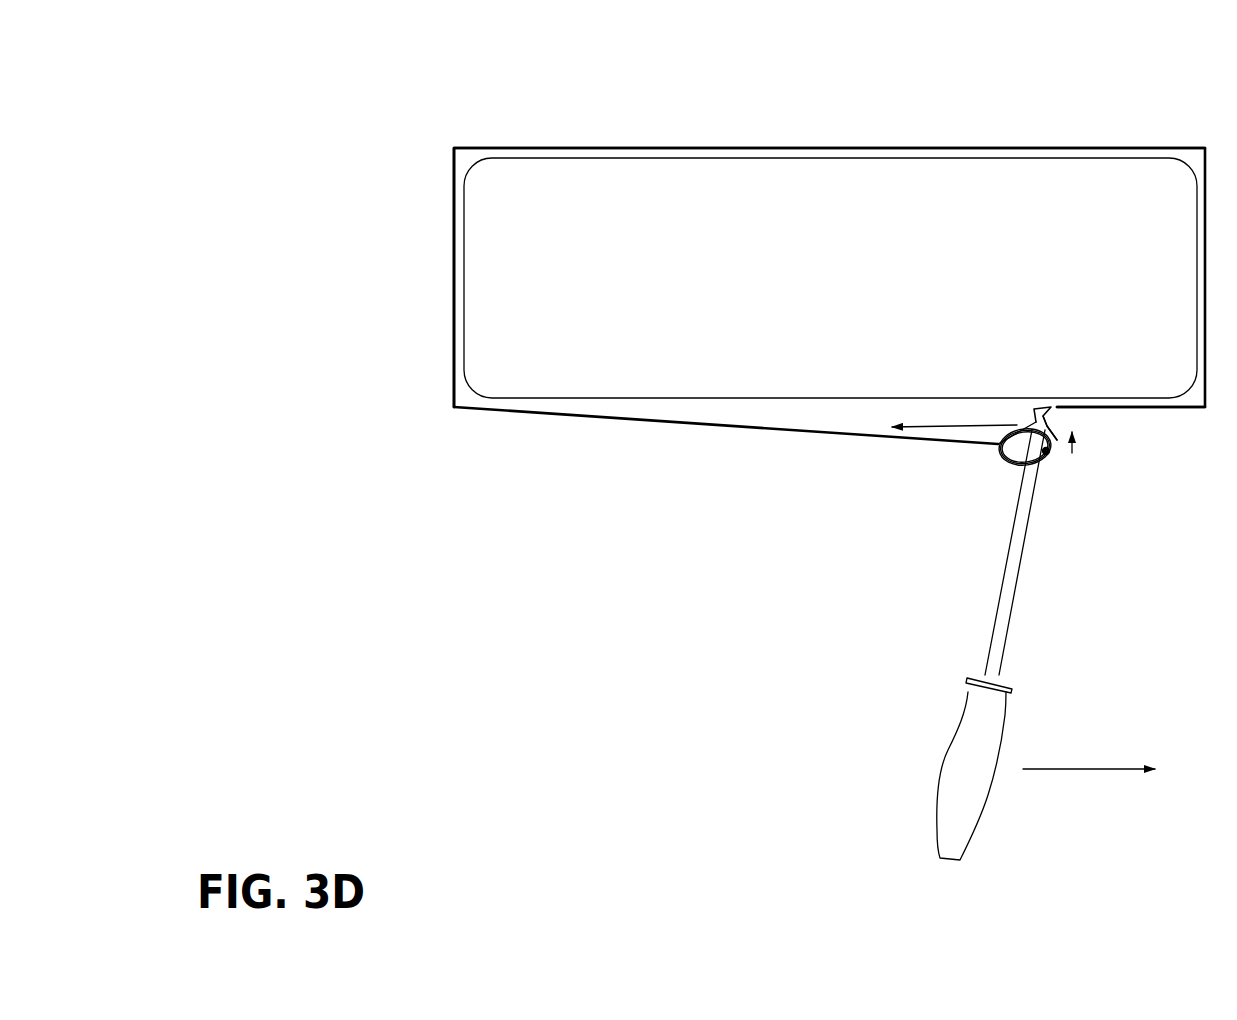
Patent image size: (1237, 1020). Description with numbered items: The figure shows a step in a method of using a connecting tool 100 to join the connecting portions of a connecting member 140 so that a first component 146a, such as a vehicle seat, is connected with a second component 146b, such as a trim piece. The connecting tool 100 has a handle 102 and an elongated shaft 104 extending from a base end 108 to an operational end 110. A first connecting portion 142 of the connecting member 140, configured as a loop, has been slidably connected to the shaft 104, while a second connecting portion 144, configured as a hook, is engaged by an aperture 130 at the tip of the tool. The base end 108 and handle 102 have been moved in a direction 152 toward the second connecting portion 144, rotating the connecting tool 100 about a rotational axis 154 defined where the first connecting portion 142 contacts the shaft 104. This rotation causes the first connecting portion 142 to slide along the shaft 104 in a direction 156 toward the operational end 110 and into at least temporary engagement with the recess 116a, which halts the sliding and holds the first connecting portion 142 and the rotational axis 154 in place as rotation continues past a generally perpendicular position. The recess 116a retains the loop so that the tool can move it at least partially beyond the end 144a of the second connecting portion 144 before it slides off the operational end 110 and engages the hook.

The connecting tool 100 is at (935, 645).
The handle 102 is at (937, 797).
The shaft 104 is at (1002, 558).
The first end 108 is at (976, 671).
The second end 110 is at (1026, 418).
The recess 116a is at (1010, 465).
The aperture 130 is at (1056, 416).
The connecting member 140 is at (480, 148).
The first connecting portion 142 is at (998, 452).
The second connecting portion 144 is at (1040, 408).
The end of the second connecting portion 144a is at (1066, 438).
The first component 146a is at (546, 216).
The second component 146b is at (451, 140).
The direction 152 is at (1078, 769).
The rotational axis 154 is at (1050, 458).
The direction 156 is at (1078, 440).